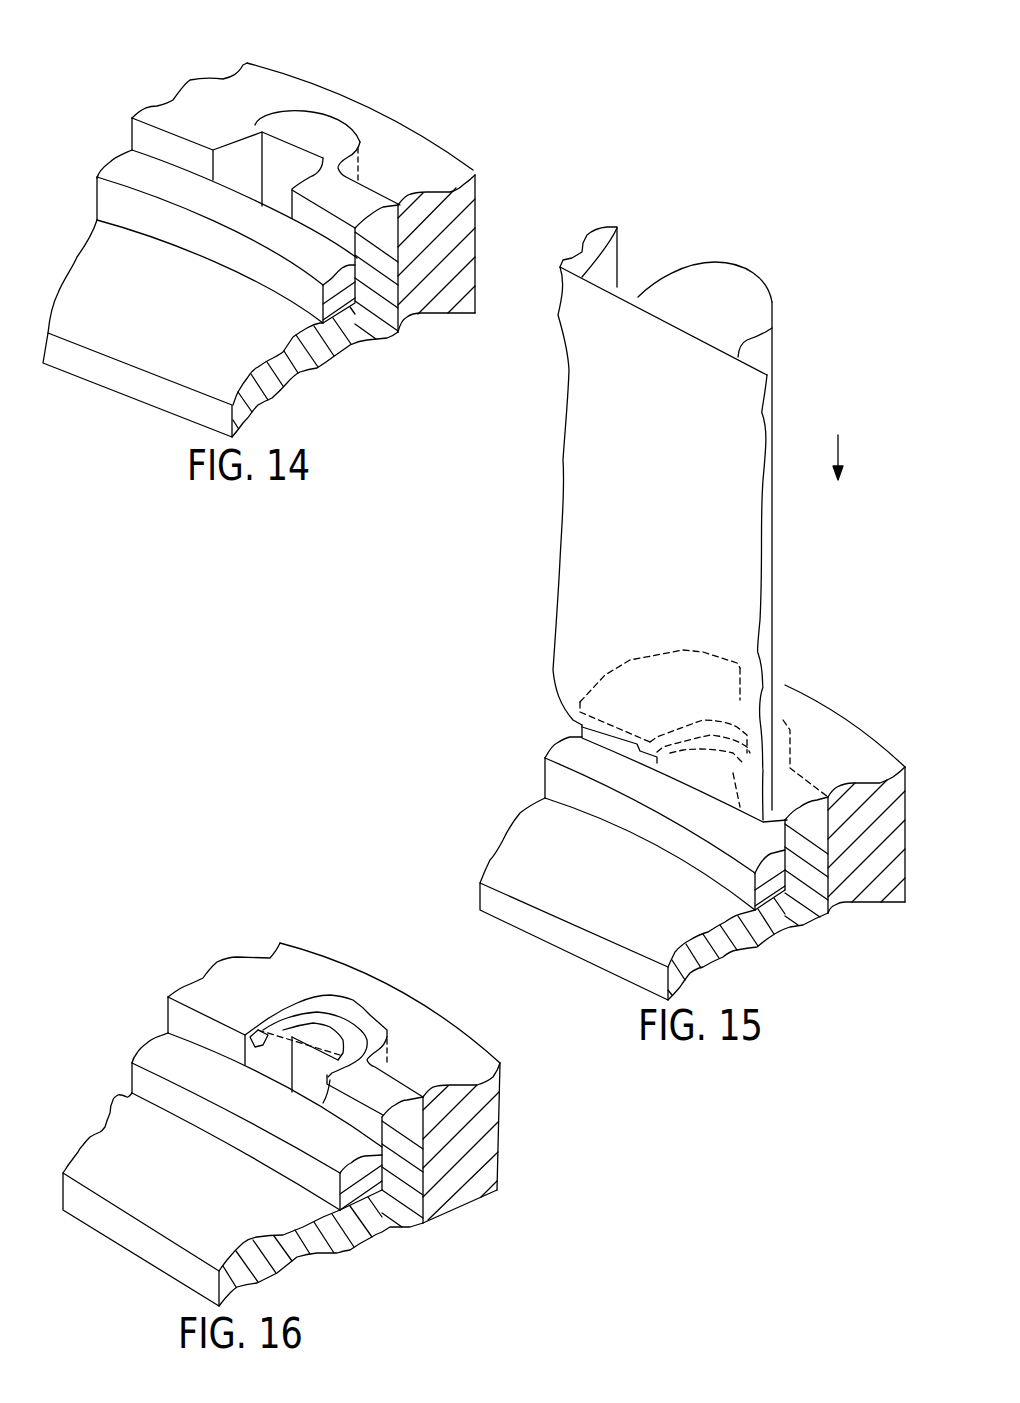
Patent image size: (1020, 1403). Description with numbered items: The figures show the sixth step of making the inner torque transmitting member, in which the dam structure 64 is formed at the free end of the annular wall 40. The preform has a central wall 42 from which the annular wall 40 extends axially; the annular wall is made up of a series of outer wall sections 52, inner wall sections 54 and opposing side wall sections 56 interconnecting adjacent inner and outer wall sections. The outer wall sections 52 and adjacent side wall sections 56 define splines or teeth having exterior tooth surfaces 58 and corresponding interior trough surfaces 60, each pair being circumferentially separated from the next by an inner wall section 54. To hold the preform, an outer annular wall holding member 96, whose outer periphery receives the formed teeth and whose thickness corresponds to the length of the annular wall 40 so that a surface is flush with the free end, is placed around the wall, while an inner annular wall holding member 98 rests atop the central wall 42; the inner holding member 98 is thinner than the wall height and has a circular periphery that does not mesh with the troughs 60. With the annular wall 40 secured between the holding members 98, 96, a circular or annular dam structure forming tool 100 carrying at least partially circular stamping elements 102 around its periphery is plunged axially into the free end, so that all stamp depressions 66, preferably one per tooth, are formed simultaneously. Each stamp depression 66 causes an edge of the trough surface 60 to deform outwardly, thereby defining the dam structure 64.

In FIG. 14, the annular wall 40 is at (383, 178).
In FIG. 15, the annular wall 40 is at (810, 772).
In FIG. 14, the central wall 42 is at (194, 341).
In FIG. 14, the outer wall sections 52 is at (313, 122).
In FIG. 14, the inner wall sections 54 is at (182, 107).
In FIG. 14, the side wall sections 56 is at (255, 126).
In FIG. 14, the exterior tooth surfaces 58 is at (347, 126).
In FIG. 14, the interior trough surfaces 60 is at (294, 163).
In FIG. 16, the interior trough surfaces 60 is at (277, 1063).
In FIG. 16, the dam structure 64 is at (327, 1080).
In FIG. 16, the stamp depressions 66 is at (337, 1027).
In FIG. 14, the outer annular wall holding member 96 is at (474, 314).
In FIG. 15, the outer annular wall holding member 96 is at (905, 837).
In FIG. 16, the outer annular wall holding member 96 is at (497, 1190).
In FIG. 14, the inner annular wall holding member 98 is at (97, 201).
In FIG. 15, the inner annular wall holding member 98 is at (545, 763).
In FIG. 16, the inner annular wall holding member 98 is at (132, 1062).
In FIG. 15, the dam structure forming tool 100 is at (715, 250).
In FIG. 15, the stamping elements 102 is at (767, 280).